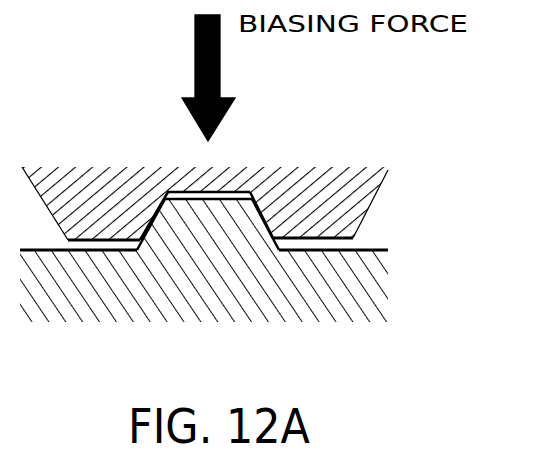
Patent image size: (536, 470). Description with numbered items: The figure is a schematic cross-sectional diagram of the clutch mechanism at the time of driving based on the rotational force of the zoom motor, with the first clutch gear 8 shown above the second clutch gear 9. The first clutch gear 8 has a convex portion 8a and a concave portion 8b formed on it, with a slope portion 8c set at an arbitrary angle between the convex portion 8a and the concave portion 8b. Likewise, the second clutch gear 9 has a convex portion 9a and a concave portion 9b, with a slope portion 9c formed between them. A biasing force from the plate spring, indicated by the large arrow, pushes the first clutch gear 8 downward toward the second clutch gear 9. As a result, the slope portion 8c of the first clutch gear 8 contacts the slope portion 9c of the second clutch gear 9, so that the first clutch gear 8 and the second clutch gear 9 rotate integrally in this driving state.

The first clutch gear 8 is at (355, 180).
The convex portion 8a is at (342, 208).
The concave portion 8b is at (210, 193).
The slope portion 8c is at (253, 194).
The second clutch gear 9 is at (263, 303).
The convex portion 9a is at (182, 203).
The concave portion 9b is at (330, 253).
The slope portion 9c is at (263, 222).